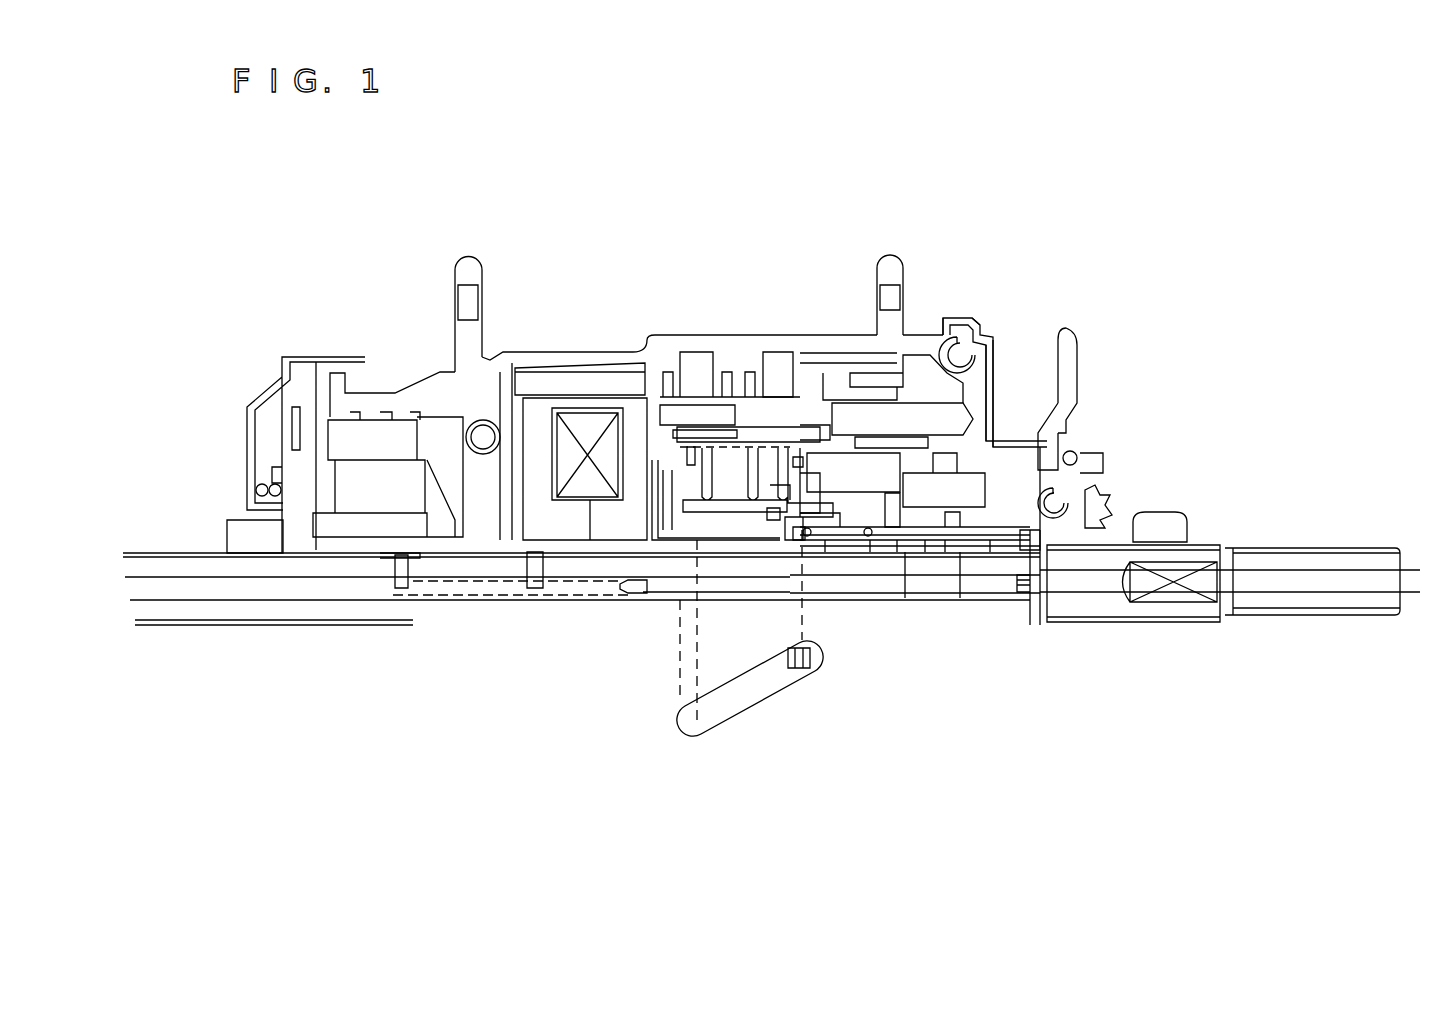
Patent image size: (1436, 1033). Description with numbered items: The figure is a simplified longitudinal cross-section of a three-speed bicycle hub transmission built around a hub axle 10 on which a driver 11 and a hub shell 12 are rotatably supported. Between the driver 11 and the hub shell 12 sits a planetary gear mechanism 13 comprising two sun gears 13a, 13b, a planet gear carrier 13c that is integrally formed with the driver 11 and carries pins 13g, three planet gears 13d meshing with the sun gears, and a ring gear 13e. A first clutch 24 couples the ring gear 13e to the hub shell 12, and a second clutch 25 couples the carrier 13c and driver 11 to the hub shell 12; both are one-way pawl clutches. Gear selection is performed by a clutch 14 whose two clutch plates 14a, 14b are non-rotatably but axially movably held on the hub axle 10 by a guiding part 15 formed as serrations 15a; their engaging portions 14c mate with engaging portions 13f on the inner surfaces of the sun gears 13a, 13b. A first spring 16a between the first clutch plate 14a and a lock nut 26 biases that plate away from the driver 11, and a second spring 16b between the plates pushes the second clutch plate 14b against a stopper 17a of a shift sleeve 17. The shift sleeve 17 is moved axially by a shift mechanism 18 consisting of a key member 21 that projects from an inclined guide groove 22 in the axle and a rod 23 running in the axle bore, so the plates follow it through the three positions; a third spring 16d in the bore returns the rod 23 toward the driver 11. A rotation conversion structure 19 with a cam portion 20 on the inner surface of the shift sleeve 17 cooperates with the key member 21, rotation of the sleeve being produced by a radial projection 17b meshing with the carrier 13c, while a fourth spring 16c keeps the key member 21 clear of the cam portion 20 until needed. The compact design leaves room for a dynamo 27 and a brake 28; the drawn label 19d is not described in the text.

The hub axle 10 is at (1207, 612).
The driver 11 is at (958, 372).
The hub shell 12 is at (923, 375).
The planetary gear mechanism 13 is at (812, 183).
The first sun gear 13a is at (1040, 478).
The second sun gear 13b is at (880, 432).
The planet gear carrier 13c is at (972, 384).
The planet gears 13d is at (970, 333).
The ring gear 13e is at (863, 340).
The engaging portion 13f is at (853, 460).
The pins 13g is at (952, 412).
The clutch 14 is at (972, 748).
The first clutch plate 14a is at (960, 533).
The second clutch plate 14b is at (900, 530).
The engaging portions 14c is at (825, 472).
The guiding part 15 is at (1095, 604).
The serrations 15a is at (1040, 612).
The first spring 16a is at (990, 533).
The second spring 16b is at (925, 532).
The fourth spring 16c is at (830, 535).
The third spring 16d is at (386, 600).
The shift sleeve 17 is at (876, 530).
The stopper 17a is at (897, 520).
The radial projection 17b is at (780, 485).
The shift mechanism 18 is at (650, 673).
The rotation conversion structure 19 is at (750, 349).
The connector portion 19d is at (943, 532).
The cam portion 20 is at (746, 437).
The key member 21 is at (793, 523).
The guide groove 22 is at (738, 703).
The rod 23 is at (1293, 587).
The first clutch 24 is at (810, 457).
The second clutch 25 is at (697, 378).
The lock nut 26 is at (1103, 535).
The dynamo 27 is at (573, 380).
The brake 28 is at (372, 430).